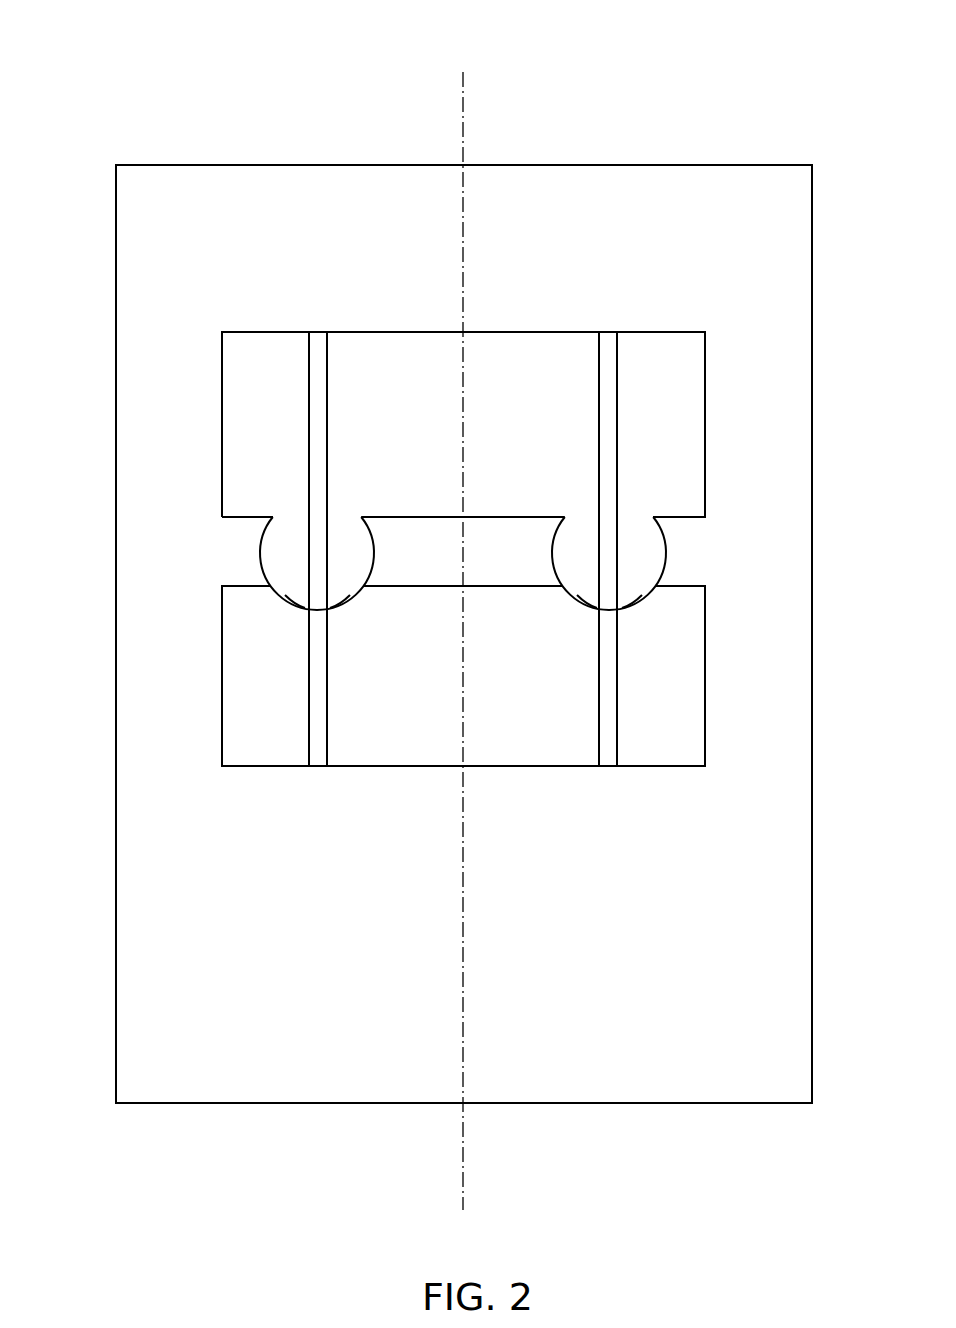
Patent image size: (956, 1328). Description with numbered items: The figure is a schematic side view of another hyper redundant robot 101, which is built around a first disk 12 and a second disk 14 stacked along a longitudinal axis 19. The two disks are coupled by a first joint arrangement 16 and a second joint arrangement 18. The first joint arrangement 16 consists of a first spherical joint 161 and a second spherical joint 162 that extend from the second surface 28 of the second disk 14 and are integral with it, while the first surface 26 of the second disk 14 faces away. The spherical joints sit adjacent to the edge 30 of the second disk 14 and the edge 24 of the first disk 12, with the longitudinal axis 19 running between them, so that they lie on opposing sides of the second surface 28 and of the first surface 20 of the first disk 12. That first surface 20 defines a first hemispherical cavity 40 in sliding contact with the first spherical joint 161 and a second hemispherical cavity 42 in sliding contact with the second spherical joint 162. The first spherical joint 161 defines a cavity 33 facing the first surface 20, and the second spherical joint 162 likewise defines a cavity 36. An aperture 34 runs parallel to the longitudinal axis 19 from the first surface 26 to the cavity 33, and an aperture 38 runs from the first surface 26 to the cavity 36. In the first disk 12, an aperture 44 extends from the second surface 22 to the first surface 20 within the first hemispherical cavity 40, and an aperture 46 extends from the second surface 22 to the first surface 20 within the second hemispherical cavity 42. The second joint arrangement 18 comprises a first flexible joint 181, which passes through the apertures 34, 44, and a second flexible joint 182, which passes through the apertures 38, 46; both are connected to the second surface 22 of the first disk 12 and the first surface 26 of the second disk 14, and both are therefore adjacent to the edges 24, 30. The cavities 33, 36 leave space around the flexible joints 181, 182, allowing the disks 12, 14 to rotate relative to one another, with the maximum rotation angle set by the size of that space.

The hyper redundant robot 101 is at (752, 101).
The longitudinal axis 19 is at (464, 106).
The first joint arrangement 16 is at (188, 578).
The edge 30 is at (222, 395).
The first surface 26 is at (385, 332).
The second disk 14 is at (685, 418).
The edge 24 is at (222, 640).
The second surface 22 is at (503, 768).
The first disk 12 is at (697, 685).
The first spherical joint 161 is at (268, 552).
The second spherical joint 162 is at (652, 555).
The second surface 28 is at (398, 518).
The first surface 20 is at (497, 584).
The second joint arrangement 18 is at (318, 345).
The aperture 34 is at (308, 368).
The aperture 38 is at (598, 385).
The aperture 44 is at (308, 712).
The aperture 46 is at (620, 712).
The first flexible joint 181 is at (318, 757).
The second flexible joint 182 is at (612, 757).
The cavity 33 is at (302, 606).
The first hemispherical cavity 40 is at (335, 606).
The cavity 36 is at (595, 606).
The second hemispherical cavity 42 is at (630, 606).